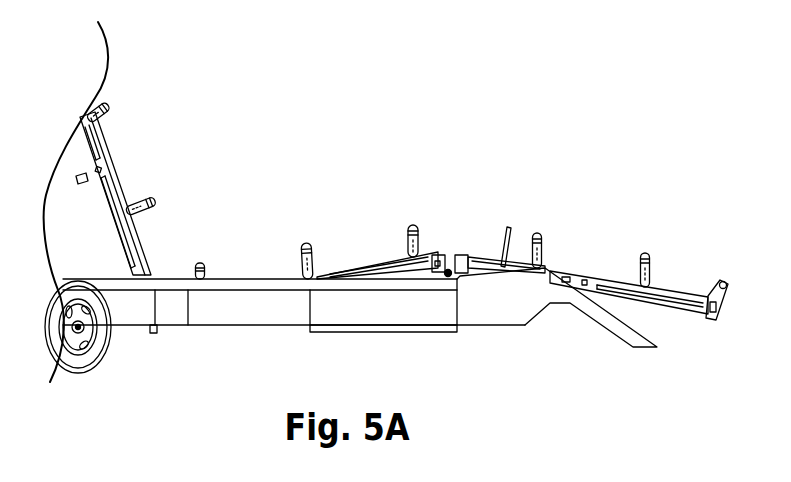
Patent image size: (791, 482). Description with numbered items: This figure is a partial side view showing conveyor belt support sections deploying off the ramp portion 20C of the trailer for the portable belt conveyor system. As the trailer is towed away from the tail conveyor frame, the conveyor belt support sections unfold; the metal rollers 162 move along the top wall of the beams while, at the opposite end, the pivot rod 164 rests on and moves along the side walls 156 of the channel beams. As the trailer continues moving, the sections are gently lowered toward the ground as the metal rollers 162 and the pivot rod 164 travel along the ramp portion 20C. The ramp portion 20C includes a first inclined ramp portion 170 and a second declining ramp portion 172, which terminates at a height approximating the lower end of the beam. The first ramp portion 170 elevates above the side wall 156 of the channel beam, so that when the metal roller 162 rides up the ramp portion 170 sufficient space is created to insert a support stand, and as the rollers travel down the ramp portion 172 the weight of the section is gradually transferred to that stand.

The side wall 156 is at (242, 277).
The metal roller 162 is at (172, 277).
The pivot rod 164 is at (452, 271).
The first inclined ramp portion 170 is at (510, 268).
The second declining ramp portion 172 is at (607, 303).
The ramp portion 20C is at (655, 353).